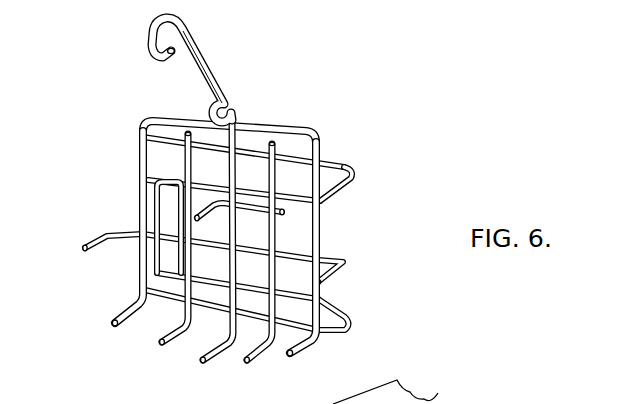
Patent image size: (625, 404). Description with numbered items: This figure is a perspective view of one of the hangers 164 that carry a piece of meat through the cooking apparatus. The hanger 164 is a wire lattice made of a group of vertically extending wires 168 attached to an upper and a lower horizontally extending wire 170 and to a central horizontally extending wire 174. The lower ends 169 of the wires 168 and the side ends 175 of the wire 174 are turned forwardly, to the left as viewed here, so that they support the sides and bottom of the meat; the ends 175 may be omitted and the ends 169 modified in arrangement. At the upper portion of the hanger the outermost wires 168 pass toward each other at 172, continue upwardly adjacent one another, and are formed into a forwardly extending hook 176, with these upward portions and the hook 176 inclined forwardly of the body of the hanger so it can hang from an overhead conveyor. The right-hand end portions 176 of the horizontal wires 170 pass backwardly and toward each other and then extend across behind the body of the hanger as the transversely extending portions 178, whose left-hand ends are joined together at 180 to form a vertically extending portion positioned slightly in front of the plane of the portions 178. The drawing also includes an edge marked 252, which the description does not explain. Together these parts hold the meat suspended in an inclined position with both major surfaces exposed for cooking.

The hanger 164 is at (73, 316).
The vertically extending wires 168 is at (237, 236).
The lower ends of the wires 169 is at (199, 358).
The upper and lower horizontally extending wires 170 is at (325, 162).
The upper portion of the hanger 172 is at (178, 123).
The central horizontally extending wire 174 is at (212, 68).
The side ends of the wire 175 is at (86, 243).
The forwardly extending hook 176 is at (152, 40).
The transversely extending portions 178 is at (216, 205).
The vertically extending portion 180 is at (158, 185).
The support edge 252 is at (400, 390).